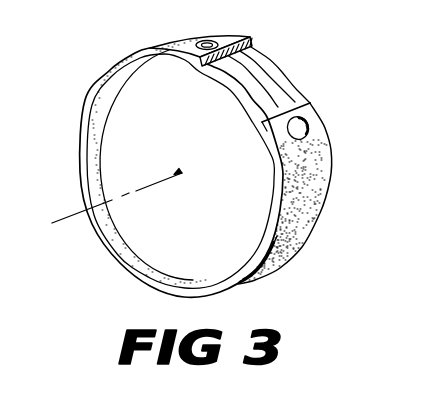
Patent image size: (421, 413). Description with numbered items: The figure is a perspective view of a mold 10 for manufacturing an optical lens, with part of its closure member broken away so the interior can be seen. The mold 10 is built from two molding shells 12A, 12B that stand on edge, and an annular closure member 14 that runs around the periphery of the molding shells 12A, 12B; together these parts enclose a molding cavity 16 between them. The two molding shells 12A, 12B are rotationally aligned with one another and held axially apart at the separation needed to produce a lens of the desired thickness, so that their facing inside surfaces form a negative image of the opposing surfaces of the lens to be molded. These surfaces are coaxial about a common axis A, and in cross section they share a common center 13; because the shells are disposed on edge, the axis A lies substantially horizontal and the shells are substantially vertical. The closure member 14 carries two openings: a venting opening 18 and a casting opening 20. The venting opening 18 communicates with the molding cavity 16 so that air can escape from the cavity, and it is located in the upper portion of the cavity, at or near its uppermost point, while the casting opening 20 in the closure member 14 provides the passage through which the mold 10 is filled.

The mold 10 is at (116, 45).
The molding shell 12A is at (247, 76).
The molding shell 12B is at (285, 79).
The center 13 is at (180, 171).
The annular closure member 14 is at (308, 208).
The molding cavity 16 is at (265, 80).
The venting opening 18 is at (206, 43).
The casting opening 20 is at (309, 125).
The axis A is at (80, 210).